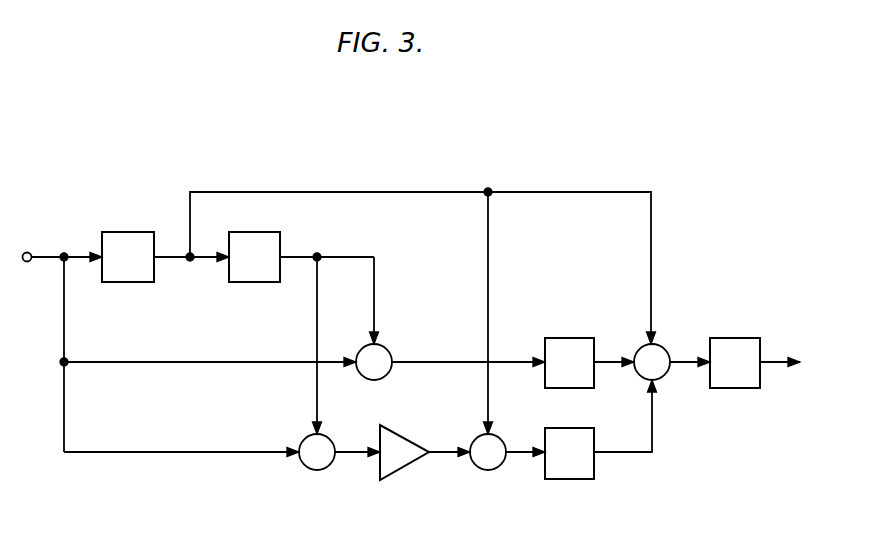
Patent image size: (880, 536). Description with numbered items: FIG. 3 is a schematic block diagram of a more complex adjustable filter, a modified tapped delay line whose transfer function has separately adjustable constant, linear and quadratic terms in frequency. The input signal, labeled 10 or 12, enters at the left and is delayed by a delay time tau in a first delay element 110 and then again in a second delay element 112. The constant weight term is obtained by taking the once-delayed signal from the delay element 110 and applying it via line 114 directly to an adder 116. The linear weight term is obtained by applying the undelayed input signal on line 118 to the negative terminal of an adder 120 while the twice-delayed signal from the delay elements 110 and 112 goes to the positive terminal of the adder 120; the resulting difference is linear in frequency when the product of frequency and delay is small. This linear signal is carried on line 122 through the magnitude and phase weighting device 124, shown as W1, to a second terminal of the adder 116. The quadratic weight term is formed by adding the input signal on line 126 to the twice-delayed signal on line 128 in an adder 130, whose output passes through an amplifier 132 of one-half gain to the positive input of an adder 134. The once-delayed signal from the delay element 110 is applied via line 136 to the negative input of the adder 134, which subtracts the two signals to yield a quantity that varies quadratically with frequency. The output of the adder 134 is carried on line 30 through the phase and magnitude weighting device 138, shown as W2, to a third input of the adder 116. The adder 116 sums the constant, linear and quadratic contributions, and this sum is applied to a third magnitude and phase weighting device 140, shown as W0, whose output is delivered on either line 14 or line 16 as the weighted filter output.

The input signal 10 is at (68, 228).
The input signal 12 is at (42, 256).
The line 14 is at (808, 393).
The line 16 is at (770, 365).
The difference signal line 30 is at (513, 441).
The delay element 110 is at (133, 232).
The delay element 112 is at (272, 232).
The line 114 is at (355, 192).
The adder 116 is at (667, 349).
The line 118 is at (180, 362).
The adder 120 is at (386, 375).
The line 122 is at (440, 362).
The magnitude and phase weighting device 124 is at (573, 337).
The line 126 is at (136, 452).
The line 128 is at (317, 323).
The adder 130 is at (319, 470).
The amplifier 132 is at (398, 475).
The adder 134 is at (492, 470).
The line 136 is at (488, 281).
The phase and magnitude weighting device 138 is at (593, 482).
The magnitude and phase weighting device 140 is at (750, 338).